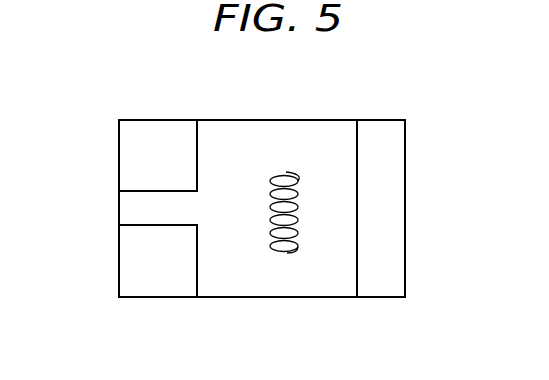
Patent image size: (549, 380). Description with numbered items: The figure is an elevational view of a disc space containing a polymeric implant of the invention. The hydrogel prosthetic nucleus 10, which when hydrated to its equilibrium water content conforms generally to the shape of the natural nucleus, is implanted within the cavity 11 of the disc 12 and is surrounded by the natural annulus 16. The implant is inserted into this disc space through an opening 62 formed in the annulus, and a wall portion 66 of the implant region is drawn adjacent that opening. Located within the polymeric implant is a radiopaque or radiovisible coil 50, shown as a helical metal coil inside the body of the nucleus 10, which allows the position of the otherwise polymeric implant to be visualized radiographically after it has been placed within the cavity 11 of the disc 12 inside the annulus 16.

The hydrogel prosthetic nucleus 10 is at (324, 275).
The cavity 11 is at (296, 126).
The disc 12 is at (152, 135).
The natural annulus 16 is at (393, 86).
The radiopaque coil 50 is at (287, 253).
The opening 62 is at (133, 212).
The wall portion 66 is at (198, 278).